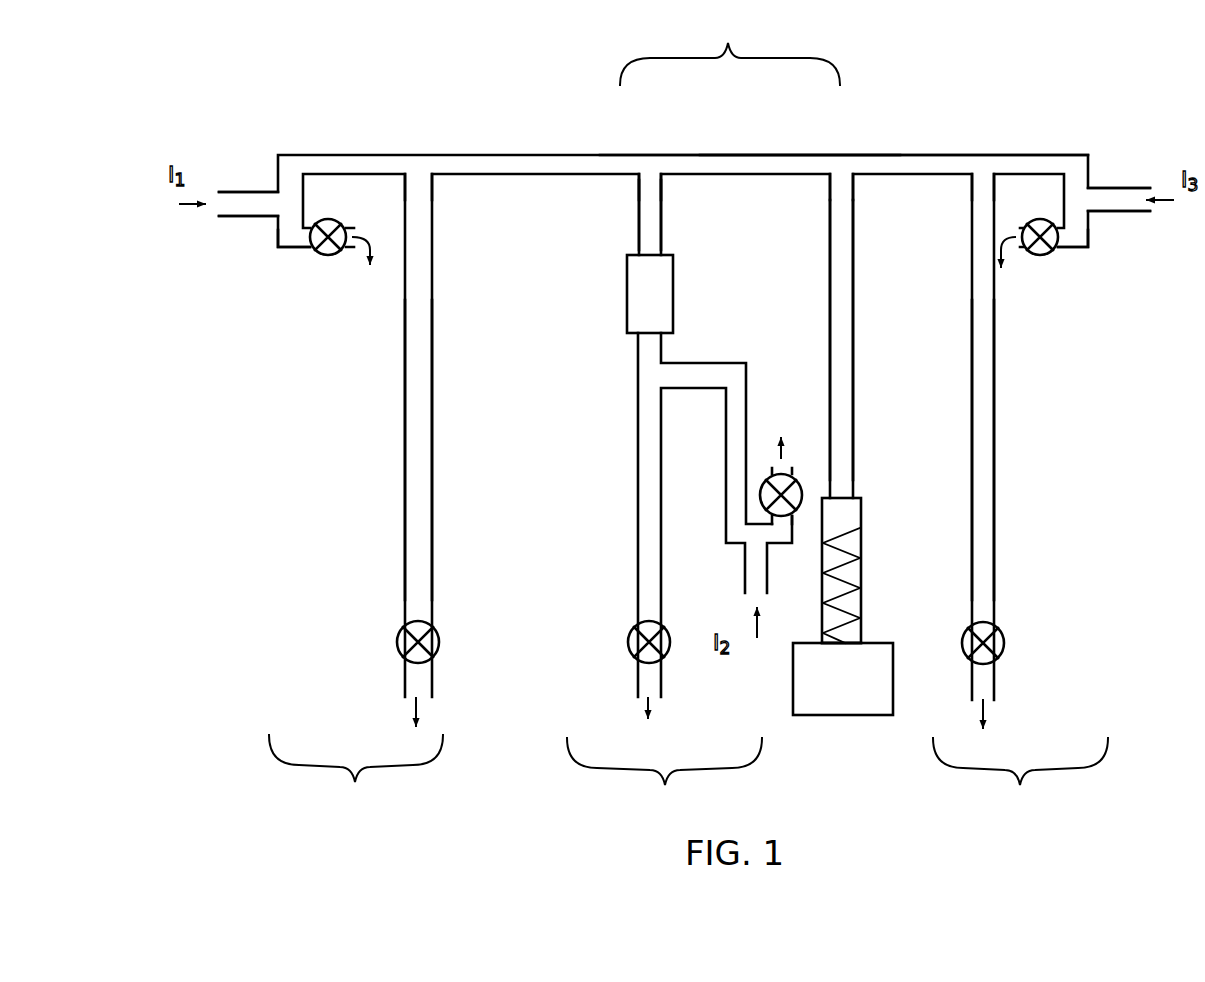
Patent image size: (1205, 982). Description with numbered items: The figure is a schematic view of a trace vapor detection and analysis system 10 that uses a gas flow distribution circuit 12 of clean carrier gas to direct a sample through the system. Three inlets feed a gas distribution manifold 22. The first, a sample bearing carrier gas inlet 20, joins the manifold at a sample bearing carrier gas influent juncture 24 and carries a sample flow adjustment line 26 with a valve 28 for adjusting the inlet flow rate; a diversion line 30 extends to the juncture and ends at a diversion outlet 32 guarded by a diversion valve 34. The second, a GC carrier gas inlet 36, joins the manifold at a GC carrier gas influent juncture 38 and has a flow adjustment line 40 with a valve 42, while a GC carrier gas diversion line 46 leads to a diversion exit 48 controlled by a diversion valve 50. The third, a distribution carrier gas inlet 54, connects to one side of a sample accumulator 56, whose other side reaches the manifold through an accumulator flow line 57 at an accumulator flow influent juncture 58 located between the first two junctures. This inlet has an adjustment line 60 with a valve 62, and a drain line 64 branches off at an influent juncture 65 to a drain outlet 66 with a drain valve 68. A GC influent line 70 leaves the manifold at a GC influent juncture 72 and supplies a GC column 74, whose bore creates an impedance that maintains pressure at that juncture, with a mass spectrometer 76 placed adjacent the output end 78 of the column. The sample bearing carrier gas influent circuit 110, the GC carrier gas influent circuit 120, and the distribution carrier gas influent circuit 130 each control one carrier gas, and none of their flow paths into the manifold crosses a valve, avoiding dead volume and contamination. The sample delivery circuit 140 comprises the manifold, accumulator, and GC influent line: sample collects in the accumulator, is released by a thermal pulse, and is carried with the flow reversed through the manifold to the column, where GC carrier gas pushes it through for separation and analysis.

The trace vapor detection and analysis system 10 is at (292, 789).
The gas flow distribution circuit 12 is at (934, 93).
The sample bearing carrier gas inlet 20 is at (236, 139).
The gas distribution manifold 22 is at (749, 148).
The sample bearing carrier gas influent juncture 24 is at (420, 158).
The sample flow adjustment line 26 is at (290, 248).
The sample flow adjustment valve 28 is at (330, 257).
The sample bearing carrier gas diversion line 30 is at (405, 433).
The diversion outlet 32 is at (400, 703).
The sample bearing carrier gas diversion valve 34 is at (397, 640).
The GC carrier gas inlet 36 is at (1105, 164).
The GC carrier gas influent juncture 38 is at (988, 158).
The GC carrier gas flow adjustment line 40 is at (1088, 249).
The GC carrier gas flow adjustment valve 42 is at (1043, 256).
The GC carrier gas diversion line 46 is at (997, 448).
The diversion exit 48 is at (993, 715).
The GC carrier gas diversion valve 50 is at (1005, 643).
The distribution carrier gas inlet 54 is at (730, 550).
The sample accumulator 56 is at (627, 295).
The accumulator flow line 57 is at (638, 208).
The accumulator flow influent juncture 58 is at (645, 160).
The distribution carrier gas adjustment line 60 is at (790, 527).
The distribution carrier gas adjustment valve 62 is at (795, 470).
The drain line 64 is at (640, 455).
The distribution carrier gas influent juncture 65 is at (645, 372).
The drain outlet 66 is at (637, 697).
The drain valve 68 is at (628, 640).
The GC influent line 70 is at (830, 278).
The GC influent juncture 72 is at (840, 160).
The GC column 74 is at (862, 562).
The mass spectrometer 76 is at (810, 716).
The output end of the GC column 78 is at (845, 643).
The sample bearing carrier gas influent circuit 110 is at (356, 769).
The GC carrier gas influent circuit 120 is at (1020, 775).
The distribution carrier gas influent circuit 130 is at (664, 774).
The sample delivery circuit 140 is at (730, 48).